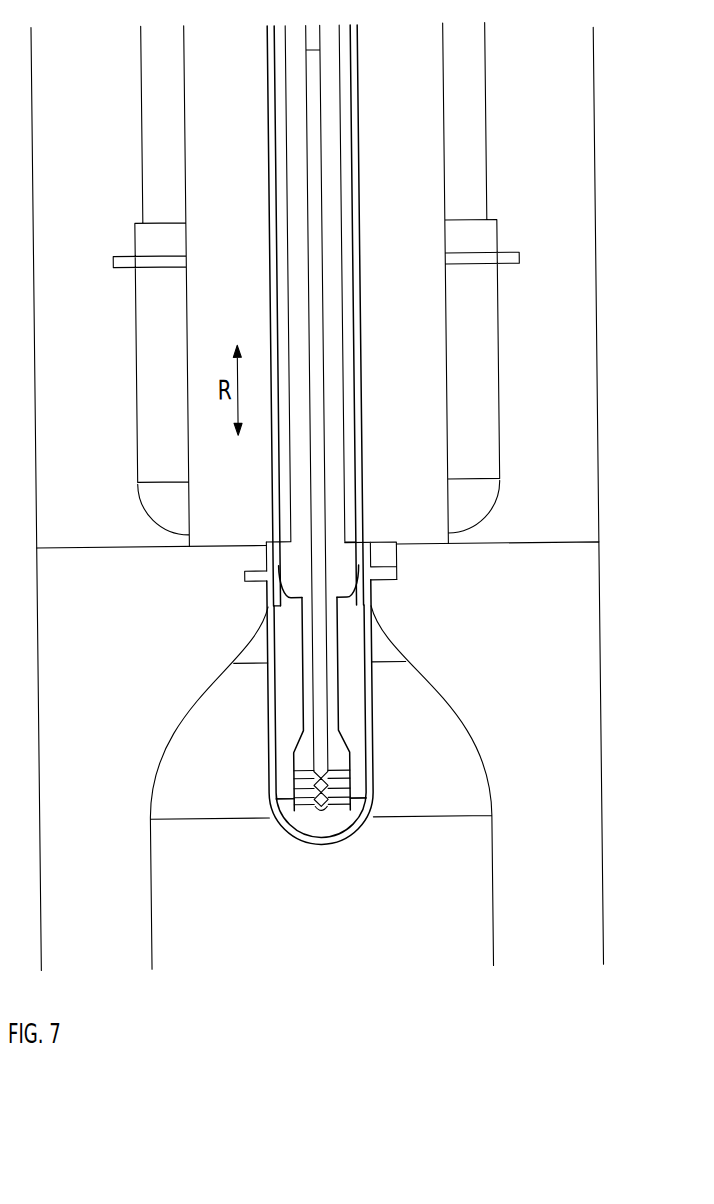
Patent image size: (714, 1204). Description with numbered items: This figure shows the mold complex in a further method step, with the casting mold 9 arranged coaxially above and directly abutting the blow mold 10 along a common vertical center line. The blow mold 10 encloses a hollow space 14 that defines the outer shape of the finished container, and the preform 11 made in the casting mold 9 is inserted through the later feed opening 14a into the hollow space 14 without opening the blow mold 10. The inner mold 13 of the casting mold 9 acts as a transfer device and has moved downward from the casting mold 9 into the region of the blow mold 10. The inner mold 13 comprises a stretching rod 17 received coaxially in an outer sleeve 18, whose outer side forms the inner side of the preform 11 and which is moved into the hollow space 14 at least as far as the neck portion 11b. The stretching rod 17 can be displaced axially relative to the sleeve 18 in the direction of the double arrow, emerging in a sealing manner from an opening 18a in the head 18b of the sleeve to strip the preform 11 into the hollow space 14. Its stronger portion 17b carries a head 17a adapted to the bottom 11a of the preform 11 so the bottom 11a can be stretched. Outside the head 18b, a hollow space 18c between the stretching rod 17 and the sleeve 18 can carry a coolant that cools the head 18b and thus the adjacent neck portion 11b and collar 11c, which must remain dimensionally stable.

The casting mold 9 is at (591, 308).
The blow mold 10 is at (586, 771).
The preform 11 is at (371, 694).
The bottom 11a is at (367, 820).
The neck portion 11b is at (366, 542).
The collar 11c is at (397, 573).
The inner mold 13 is at (352, 735).
The hollow space 14 is at (424, 758).
The feed opening 14a is at (372, 597).
The stretching rod 17 is at (302, 718).
The head 17a is at (308, 828).
The stronger portion 17b is at (344, 473).
The outer sleeve 18 is at (274, 454).
The opening 18a is at (290, 562).
The head 18b is at (283, 580).
The hollow space 18c is at (291, 500).